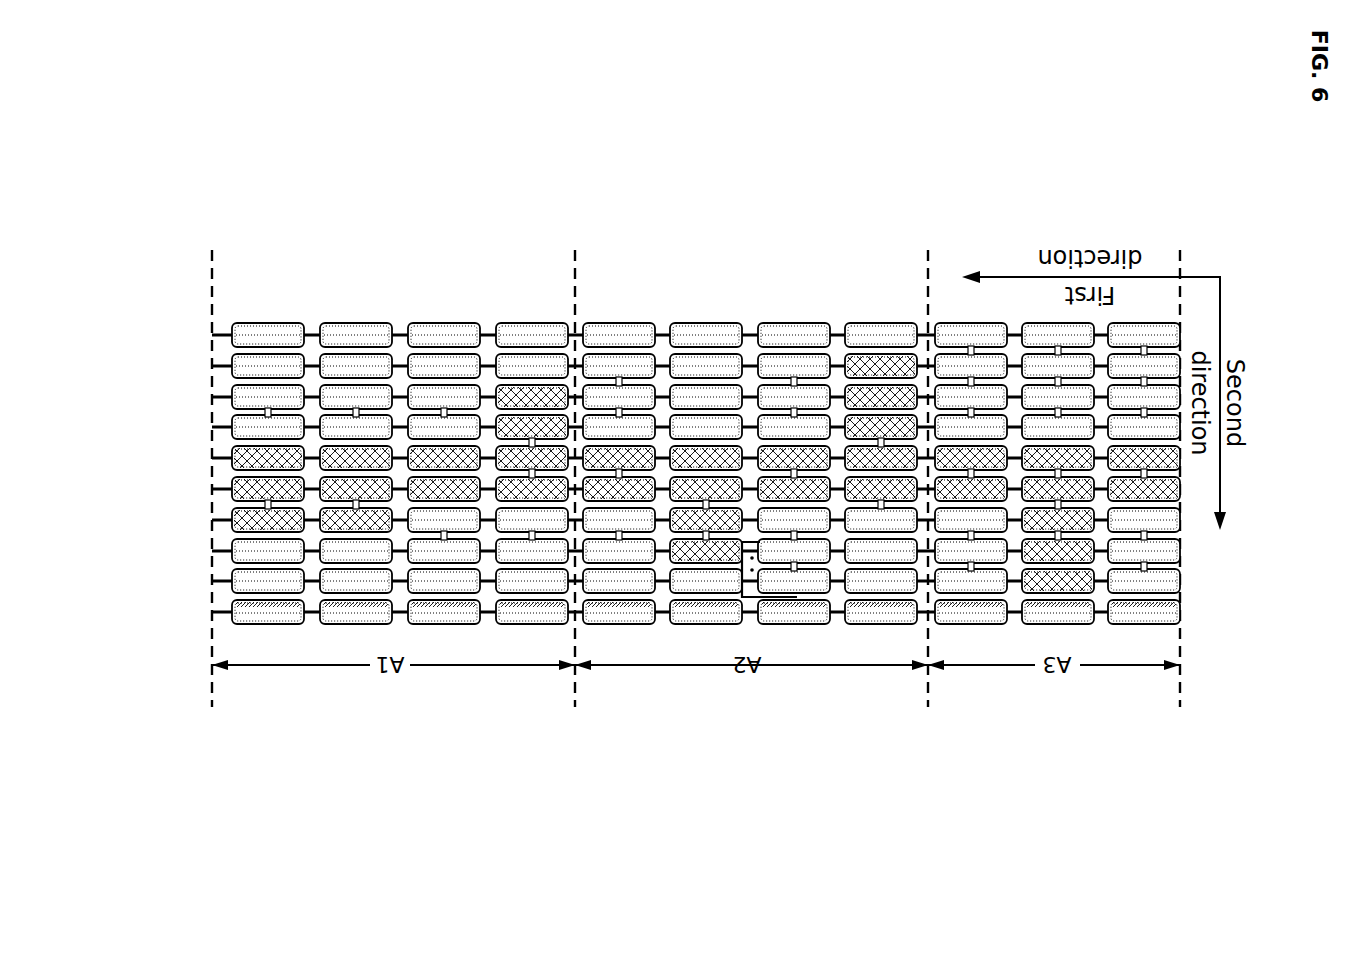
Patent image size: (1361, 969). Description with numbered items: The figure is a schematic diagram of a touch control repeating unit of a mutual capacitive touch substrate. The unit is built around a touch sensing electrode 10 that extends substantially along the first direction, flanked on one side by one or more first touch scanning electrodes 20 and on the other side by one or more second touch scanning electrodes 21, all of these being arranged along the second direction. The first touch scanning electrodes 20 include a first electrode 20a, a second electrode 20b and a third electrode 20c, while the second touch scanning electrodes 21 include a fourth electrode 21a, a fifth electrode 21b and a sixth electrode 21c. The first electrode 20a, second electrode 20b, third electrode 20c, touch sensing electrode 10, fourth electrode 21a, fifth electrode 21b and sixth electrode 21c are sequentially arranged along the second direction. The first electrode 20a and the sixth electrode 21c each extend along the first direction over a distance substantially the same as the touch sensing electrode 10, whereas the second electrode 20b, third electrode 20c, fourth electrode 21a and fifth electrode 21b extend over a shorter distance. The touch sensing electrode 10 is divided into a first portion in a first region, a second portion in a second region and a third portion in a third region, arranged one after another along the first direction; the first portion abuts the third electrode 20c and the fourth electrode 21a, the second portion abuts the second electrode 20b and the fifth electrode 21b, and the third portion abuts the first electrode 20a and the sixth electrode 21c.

The touch sensing electrode 10 is at (212, 458).
The first touch scanning electrodes 20 is at (137, 300).
The first electrode 20a is at (212, 334).
The second electrode 20b is at (212, 366).
The third electrode 20c is at (212, 397).
The second touch scanning electrodes 21 is at (137, 528).
The fourth electrode 21a is at (212, 551).
The fifth electrode 21b is at (212, 581).
The sixth electrode 21c is at (212, 612).